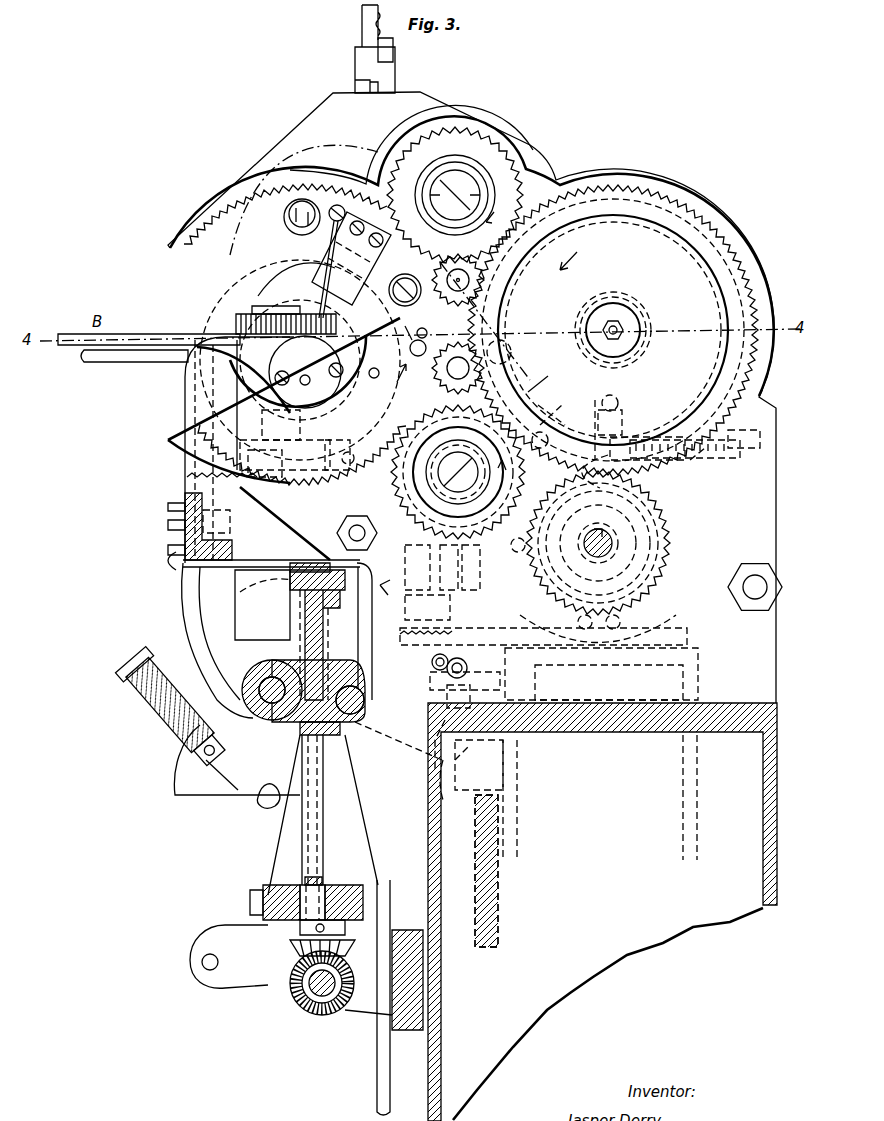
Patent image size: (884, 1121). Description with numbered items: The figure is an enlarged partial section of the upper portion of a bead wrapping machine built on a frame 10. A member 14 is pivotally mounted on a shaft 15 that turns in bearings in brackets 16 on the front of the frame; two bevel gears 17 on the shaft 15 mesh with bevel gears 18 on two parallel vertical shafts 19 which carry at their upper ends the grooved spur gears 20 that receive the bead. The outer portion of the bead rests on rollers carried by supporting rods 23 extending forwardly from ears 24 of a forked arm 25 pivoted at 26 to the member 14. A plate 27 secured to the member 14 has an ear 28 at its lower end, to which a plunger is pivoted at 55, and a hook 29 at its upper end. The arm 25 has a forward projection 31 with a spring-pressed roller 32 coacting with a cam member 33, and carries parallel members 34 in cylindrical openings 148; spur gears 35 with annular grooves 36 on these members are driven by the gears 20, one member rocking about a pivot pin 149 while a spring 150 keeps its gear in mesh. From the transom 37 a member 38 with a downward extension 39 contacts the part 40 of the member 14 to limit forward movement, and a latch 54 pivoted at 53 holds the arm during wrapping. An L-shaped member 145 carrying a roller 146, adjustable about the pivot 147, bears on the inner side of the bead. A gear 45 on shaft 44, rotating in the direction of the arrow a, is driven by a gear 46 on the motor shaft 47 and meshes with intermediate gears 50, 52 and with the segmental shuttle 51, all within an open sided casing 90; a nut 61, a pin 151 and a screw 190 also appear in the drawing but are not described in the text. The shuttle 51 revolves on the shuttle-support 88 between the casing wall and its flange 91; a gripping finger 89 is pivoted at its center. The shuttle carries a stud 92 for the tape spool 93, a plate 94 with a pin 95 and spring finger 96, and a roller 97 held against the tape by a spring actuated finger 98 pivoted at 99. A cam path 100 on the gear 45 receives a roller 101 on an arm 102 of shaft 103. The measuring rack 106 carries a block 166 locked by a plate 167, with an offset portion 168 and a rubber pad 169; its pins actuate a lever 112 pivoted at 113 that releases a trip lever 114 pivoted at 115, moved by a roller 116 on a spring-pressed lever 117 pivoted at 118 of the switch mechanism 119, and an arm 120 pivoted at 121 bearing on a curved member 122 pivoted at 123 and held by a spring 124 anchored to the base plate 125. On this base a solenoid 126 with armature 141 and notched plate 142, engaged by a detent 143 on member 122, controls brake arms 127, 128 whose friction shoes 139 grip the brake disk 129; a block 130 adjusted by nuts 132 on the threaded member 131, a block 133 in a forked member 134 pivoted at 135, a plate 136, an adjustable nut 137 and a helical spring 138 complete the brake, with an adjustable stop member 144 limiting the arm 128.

The frame 10 is at (618, 733).
The member 14 is at (305, 618).
The shaft 15 is at (320, 992).
The brackets 16 is at (362, 1000).
The bevel gears 17 is at (300, 1005).
The bevel gears 18 is at (292, 950).
The vertical shafts 19 is at (300, 850).
The spur gears 20 is at (372, 388).
The supporting rods 23 is at (106, 362).
The ears 24 is at (188, 335).
The forked arm or frame 25 is at (185, 620).
The pivot 26 is at (284, 668).
The plate 27 is at (258, 905).
The ear 28 is at (236, 982).
The hook 29 is at (222, 800).
The forward projection 31 is at (142, 724).
The spring-pressed roller 32 is at (190, 760).
The cam member 33 is at (174, 790).
The parallel members 34 is at (270, 452).
The spur gears 35 is at (236, 330).
The annular groove 36 is at (242, 350).
The transom 37 is at (182, 496).
The member 38 is at (305, 545).
The downward extension 39 is at (366, 586).
The part of member 14 40 is at (286, 582).
The shaft 44 is at (626, 326).
The gear 45 is at (715, 228).
The gear 46 is at (664, 520).
The motor shaft 47 is at (604, 556).
The intermediate gear 50 is at (492, 148).
The segmental gear or shuttle 51 is at (205, 218).
The intermediate gear 52 is at (516, 392).
The pivot 53 is at (338, 530).
The latch 54 is at (176, 560).
The pivot 55 is at (201, 962).
The nut 61 is at (766, 582).
The shuttle-support 88 is at (276, 272).
The gripping finger 89 is at (340, 374).
The casing 90 is at (608, 176).
The flange 91 is at (356, 402).
The stud 92 is at (286, 224).
The spool 93 is at (258, 152).
The plate 94 is at (370, 254).
The pin 95 is at (379, 371).
The spring finger 96 is at (326, 244).
The roller 97 is at (405, 306).
The spring actuated finger 98 is at (417, 333).
The pivot 99 is at (410, 348).
The cam path 100 is at (508, 312).
The roller 101 is at (511, 353).
The arm 102 is at (512, 296).
The shaft 103 is at (460, 270).
The measuring rack 106 is at (362, 20).
The lever 112 is at (400, 742).
The pivot 113 is at (332, 730).
The trip lever 114 is at (422, 776).
The pivot 115 is at (445, 800).
The roller 116 is at (479, 765).
The spring-pressed lever 117 is at (447, 700).
The pivot 118 is at (505, 690).
The switch mechanism 119 is at (504, 775).
The arm 120 is at (430, 662).
The pivot 121 is at (464, 664).
The curved member 122 is at (356, 632).
The pivot 123 is at (458, 380).
The spring 124 is at (426, 607).
The base plate 125 is at (690, 632).
The solenoid 126 is at (535, 622).
The brake arm 127 is at (672, 586).
The brake arm 128 is at (550, 626).
The brake disk 129 is at (666, 598).
The block 130 is at (575, 414).
The threaded member 131 is at (735, 450).
The nuts 132 is at (563, 406).
The block 133 is at (603, 410).
The forked member 134 is at (578, 490).
The pivot 135 is at (656, 470).
The plate 136 is at (622, 408).
The adjustable nut 137 is at (692, 480).
The helical spring 138 is at (660, 426).
The friction pad or shoe 139 is at (662, 566).
The armature 141 is at (450, 567).
The notched plate 142 is at (444, 567).
The detent 143 is at (444, 452).
The adjustable stop member 144 is at (476, 567).
The L-shaped member 145 is at (185, 380).
The roller 146 is at (252, 310).
The pivot 147 is at (180, 468).
The cylindrical openings 148 is at (292, 440).
The pivot pin 149 is at (322, 426).
The spring 150 is at (262, 548).
The pin 151 is at (338, 456).
The block 166 is at (396, 72).
The locking plate 167 is at (393, 46).
The offset portion 168 is at (356, 84).
The rubber pad 169 is at (392, 92).
The screw 190 is at (458, 472).
The arrow a is at (565, 259).